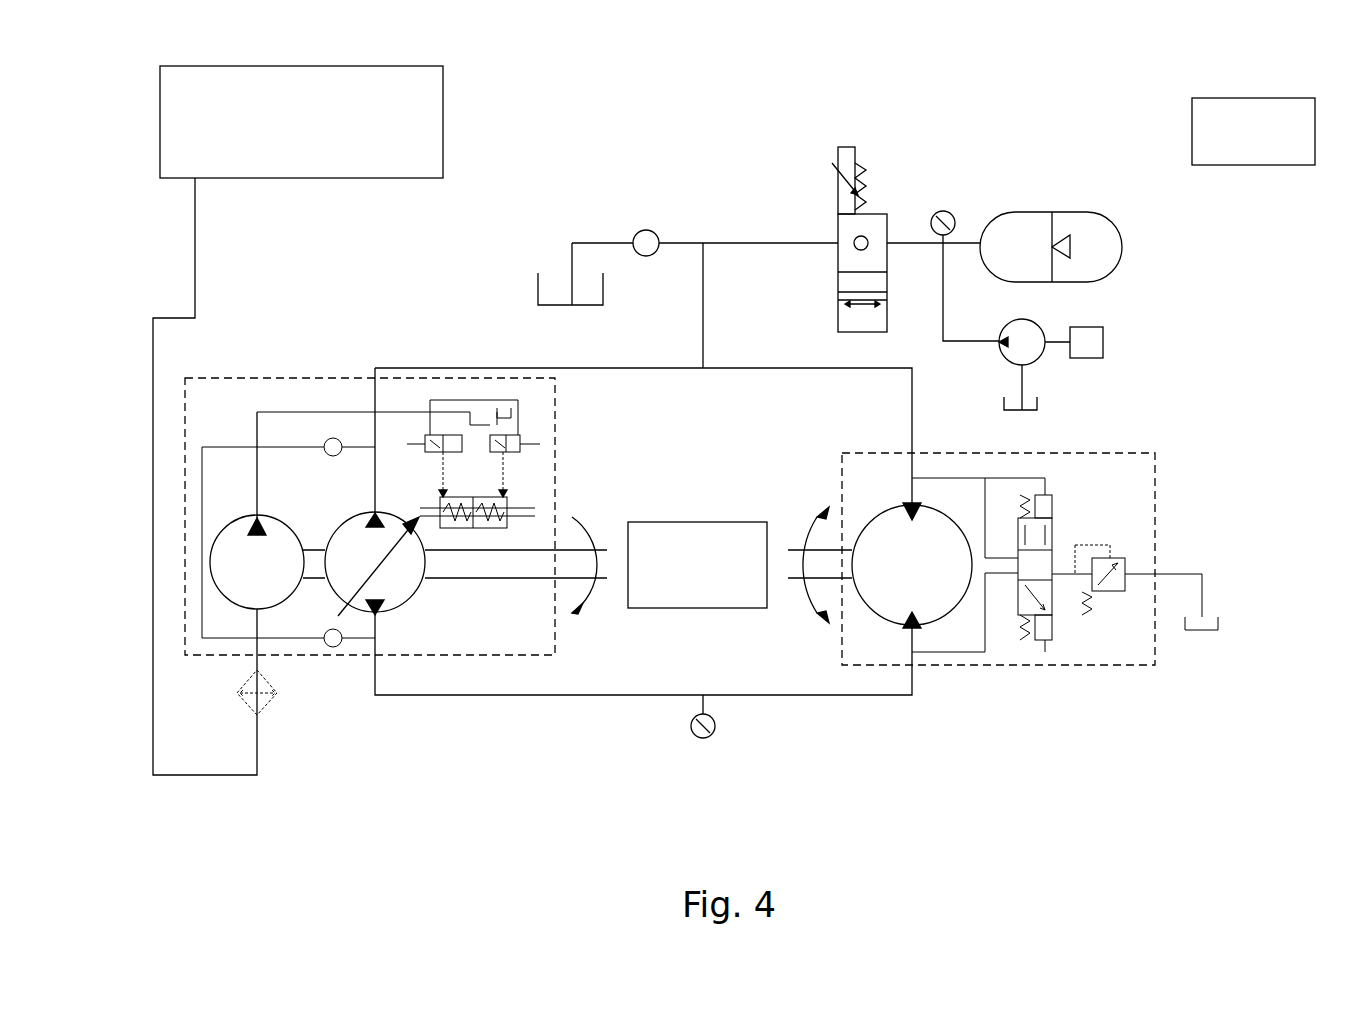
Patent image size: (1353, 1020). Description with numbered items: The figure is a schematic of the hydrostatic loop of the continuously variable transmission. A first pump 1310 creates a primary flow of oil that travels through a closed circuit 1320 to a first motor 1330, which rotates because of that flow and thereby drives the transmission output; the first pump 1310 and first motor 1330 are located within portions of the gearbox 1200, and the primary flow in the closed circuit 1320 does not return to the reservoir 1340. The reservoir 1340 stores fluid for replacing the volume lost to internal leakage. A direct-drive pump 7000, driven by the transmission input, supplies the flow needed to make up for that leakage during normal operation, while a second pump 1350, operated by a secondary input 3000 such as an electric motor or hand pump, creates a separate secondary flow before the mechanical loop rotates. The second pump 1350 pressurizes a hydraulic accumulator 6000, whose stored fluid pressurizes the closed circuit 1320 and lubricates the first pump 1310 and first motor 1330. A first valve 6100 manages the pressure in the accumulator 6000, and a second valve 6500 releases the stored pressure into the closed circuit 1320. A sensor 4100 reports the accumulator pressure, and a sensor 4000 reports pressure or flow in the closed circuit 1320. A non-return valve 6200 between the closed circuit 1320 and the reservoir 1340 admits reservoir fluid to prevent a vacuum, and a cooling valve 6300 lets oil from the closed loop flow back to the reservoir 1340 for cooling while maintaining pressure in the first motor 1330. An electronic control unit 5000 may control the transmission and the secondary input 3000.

The reservoir 1340 is at (435, 127).
The closed circuit 1320 is at (470, 367).
The direct-drive pump 7000 is at (278, 598).
The first pump 1310 is at (402, 600).
The gearbox 1200 is at (673, 623).
The sensor 4000 is at (712, 745).
The first motor 1330 is at (947, 620).
The cooling valve 6300 is at (1125, 565).
The non-return valve 6200 is at (652, 230).
The first valve 6100 is at (838, 222).
The second valve 6500 is at (837, 292).
The sensor 4100 is at (943, 212).
The hydraulic accumulator 6000 is at (1052, 212).
The electronic control unit 5000 is at (1245, 105).
The second pump 1350 is at (1035, 360).
The secondary input 3000 is at (1110, 325).